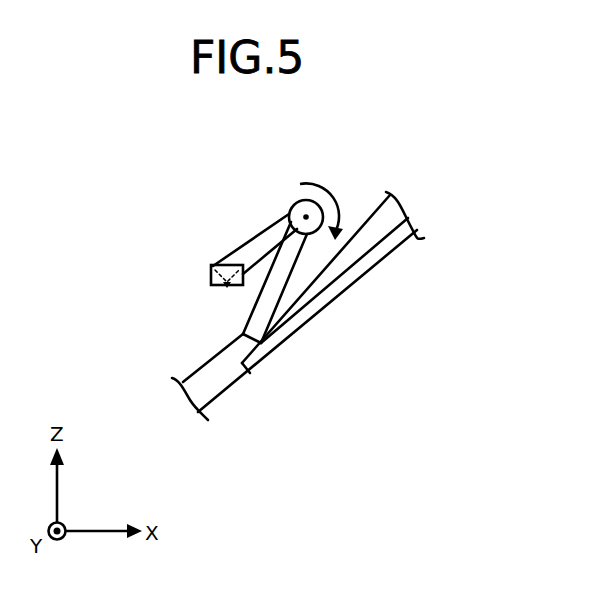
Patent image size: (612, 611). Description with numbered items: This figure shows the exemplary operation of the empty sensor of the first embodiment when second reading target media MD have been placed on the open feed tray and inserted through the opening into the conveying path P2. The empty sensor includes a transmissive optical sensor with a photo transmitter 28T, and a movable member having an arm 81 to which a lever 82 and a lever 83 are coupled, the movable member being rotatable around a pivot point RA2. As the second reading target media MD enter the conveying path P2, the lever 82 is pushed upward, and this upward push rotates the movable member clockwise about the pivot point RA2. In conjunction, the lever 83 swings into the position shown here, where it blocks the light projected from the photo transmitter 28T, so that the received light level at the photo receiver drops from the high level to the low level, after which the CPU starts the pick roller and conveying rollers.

The arm 81 is at (293, 209).
The lever 82 is at (252, 310).
The lever 83 is at (258, 237).
The photo transmitter 28T is at (209, 274).
The conveying path P2 is at (224, 372).
The second reading target media MD is at (392, 248).
The pivot point RA2 is at (305, 215).